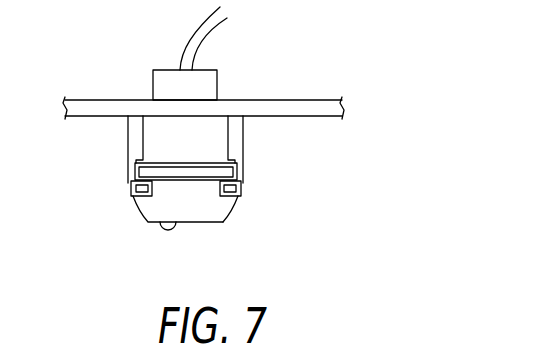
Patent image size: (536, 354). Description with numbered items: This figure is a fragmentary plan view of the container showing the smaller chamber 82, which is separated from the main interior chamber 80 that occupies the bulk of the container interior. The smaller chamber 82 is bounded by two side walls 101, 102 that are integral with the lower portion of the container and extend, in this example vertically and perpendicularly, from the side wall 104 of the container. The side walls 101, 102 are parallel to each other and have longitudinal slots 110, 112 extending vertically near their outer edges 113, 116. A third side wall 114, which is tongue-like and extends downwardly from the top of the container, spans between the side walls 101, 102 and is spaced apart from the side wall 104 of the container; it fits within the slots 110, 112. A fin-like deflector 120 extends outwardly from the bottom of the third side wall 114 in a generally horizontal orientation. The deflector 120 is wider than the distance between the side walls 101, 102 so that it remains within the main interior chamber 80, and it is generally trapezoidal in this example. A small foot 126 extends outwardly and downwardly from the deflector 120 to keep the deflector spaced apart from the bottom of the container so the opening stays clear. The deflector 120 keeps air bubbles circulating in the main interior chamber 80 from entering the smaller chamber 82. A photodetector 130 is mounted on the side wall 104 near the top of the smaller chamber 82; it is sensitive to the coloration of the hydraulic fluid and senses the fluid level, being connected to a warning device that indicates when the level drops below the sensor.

The main interior chamber 80 is at (283, 118).
The smaller chamber 82 is at (217, 140).
The side wall 101 is at (132, 147).
The side wall 102 is at (240, 143).
The side wall of the container 104 is at (91, 108).
The longitudinal slot 110 is at (137, 185).
The longitudinal slot 112 is at (243, 180).
The outer edge 113 is at (133, 197).
The third side wall 114 is at (201, 171).
The outer edge 116 is at (237, 190).
The fin-like deflector 120 is at (160, 203).
The small foot 126 is at (170, 233).
The photodetector 130 is at (172, 87).